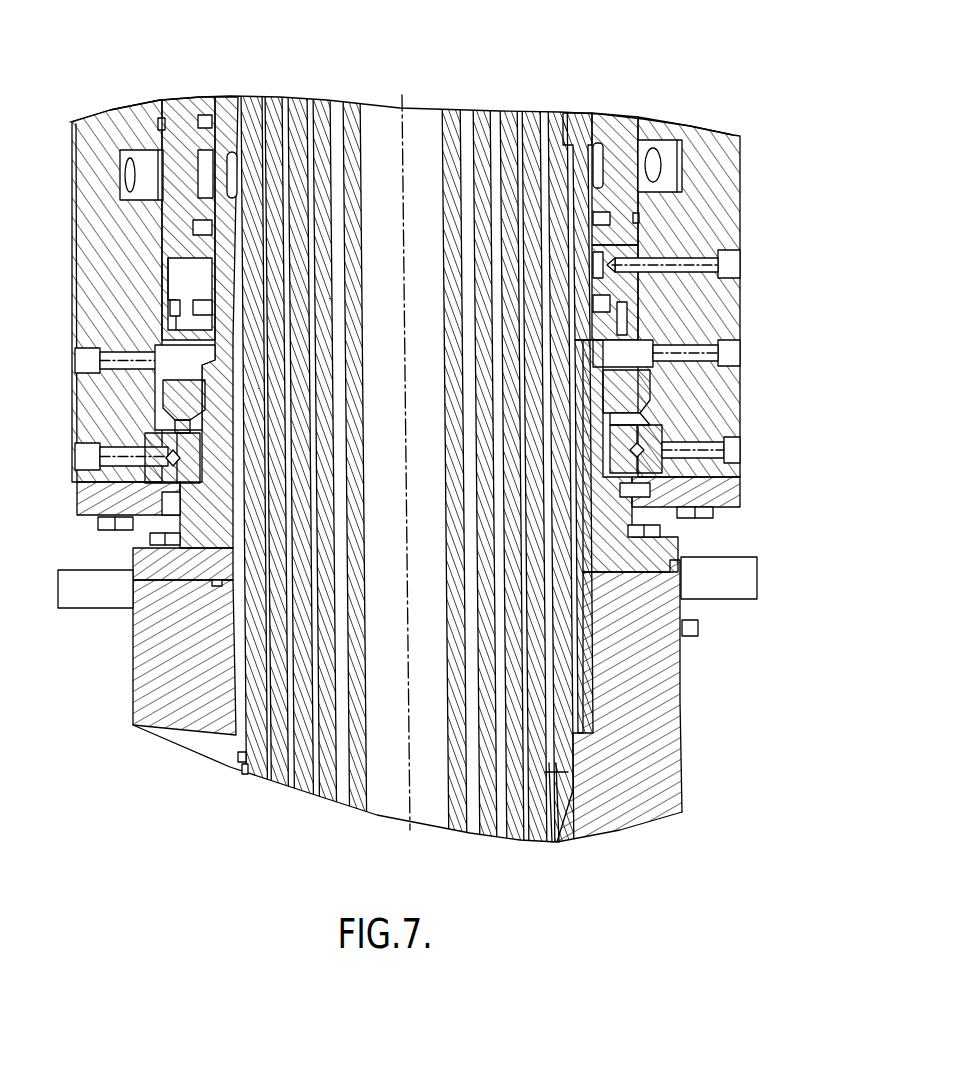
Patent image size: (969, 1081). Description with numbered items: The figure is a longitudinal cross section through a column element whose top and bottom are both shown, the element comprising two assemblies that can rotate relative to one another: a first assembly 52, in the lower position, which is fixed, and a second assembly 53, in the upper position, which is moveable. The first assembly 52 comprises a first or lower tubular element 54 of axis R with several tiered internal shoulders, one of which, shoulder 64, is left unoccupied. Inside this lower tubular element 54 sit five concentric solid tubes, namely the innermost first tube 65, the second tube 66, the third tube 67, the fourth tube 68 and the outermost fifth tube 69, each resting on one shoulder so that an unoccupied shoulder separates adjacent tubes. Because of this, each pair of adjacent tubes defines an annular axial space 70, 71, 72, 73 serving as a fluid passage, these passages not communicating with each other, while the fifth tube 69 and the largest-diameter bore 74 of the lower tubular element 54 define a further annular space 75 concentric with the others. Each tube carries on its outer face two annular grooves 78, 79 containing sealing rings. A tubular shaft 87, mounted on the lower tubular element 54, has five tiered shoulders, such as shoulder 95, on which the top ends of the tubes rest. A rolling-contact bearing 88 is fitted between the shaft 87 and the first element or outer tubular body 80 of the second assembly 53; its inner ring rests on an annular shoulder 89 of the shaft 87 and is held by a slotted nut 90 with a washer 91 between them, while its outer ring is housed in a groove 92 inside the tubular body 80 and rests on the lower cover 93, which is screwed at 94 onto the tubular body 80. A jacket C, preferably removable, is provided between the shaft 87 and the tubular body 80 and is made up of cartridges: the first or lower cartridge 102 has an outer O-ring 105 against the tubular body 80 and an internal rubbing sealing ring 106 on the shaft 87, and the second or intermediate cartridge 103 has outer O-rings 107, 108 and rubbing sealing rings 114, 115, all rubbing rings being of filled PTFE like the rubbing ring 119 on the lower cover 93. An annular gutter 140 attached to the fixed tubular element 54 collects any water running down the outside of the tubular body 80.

The first assembly 52 is at (645, 685).
The second assembly 53 is at (740, 178).
The first or lower tubular element 54 is at (630, 807).
The shoulder 64 is at (235, 733).
The first tube 65 is at (375, 812).
The second tube 66 is at (337, 773).
The third tube 67 is at (310, 767).
The fourth tube 68 is at (280, 767).
The fifth tube 69 is at (257, 720).
The annular axial space 70 is at (475, 805).
The annular axial space 71 is at (505, 818).
The annular axial space 72 is at (527, 825).
The annular axial space 73 is at (555, 763).
The largest-diameter bore 74 is at (587, 707).
The annular space 75 is at (575, 330).
The annular groove 78 is at (247, 770).
The annular groove 79 is at (244, 760).
The first element or outer tubular body 80 is at (695, 300).
The tubular shaft 87 is at (642, 560).
The rolling-contact bearing 88 is at (648, 437).
The annular shoulder 89 is at (740, 492).
The slotted nut 90 is at (632, 388).
The washer 91 is at (648, 415).
The groove 92 is at (200, 418).
The lower cover 93 is at (115, 505).
The screw fastening 94 is at (100, 528).
The tiered shoulder 95 is at (243, 100).
The first or lower cartridge 102 is at (180, 275).
The second or intermediate cartridge 103 is at (185, 150).
The outer O-ring 105 is at (167, 312).
The internal rubbing sealing ring 106 is at (197, 307).
The outer O-ring 107 is at (639, 218).
The outer O-ring 108 is at (162, 125).
The rubbing sealing ring 114 is at (602, 212).
The rubbing sealing ring 115 is at (203, 113).
The rubbing ring 119 is at (172, 502).
The annular gutter 140 is at (732, 576).
The jacket C is at (615, 138).
The axis R is at (412, 798).